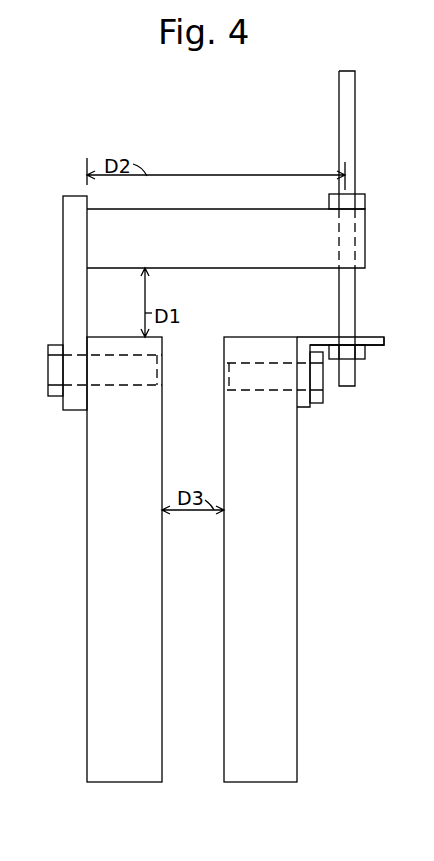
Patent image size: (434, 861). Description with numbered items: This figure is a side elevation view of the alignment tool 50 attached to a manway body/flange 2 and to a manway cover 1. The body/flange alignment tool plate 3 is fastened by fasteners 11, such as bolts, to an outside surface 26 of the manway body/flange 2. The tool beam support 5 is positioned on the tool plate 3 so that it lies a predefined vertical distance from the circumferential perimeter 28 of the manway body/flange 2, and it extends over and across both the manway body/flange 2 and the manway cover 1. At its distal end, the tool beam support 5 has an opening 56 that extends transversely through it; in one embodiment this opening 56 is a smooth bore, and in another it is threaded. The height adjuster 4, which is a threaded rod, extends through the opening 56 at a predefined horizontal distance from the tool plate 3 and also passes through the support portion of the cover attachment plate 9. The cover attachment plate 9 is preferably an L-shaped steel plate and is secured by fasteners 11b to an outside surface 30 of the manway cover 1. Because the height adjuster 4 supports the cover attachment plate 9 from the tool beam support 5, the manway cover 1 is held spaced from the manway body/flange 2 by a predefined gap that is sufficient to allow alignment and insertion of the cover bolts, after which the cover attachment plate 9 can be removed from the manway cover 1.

The manway cover 1 is at (261, 747).
The manway body/flange 2 is at (110, 740).
The tool plate 3 is at (78, 294).
The height adjuster 4 is at (350, 129).
The tool beam support 5 is at (176, 222).
The cover attachment plate 9 is at (362, 342).
The fasteners 11 is at (54, 373).
The fasteners 11b is at (319, 380).
The outside surface 26 is at (79, 569).
The circumferential perimeter 28 is at (241, 331).
The outside surface 30 is at (305, 571).
The alignment tool 50 is at (75, 133).
The opening 56 is at (345, 243).